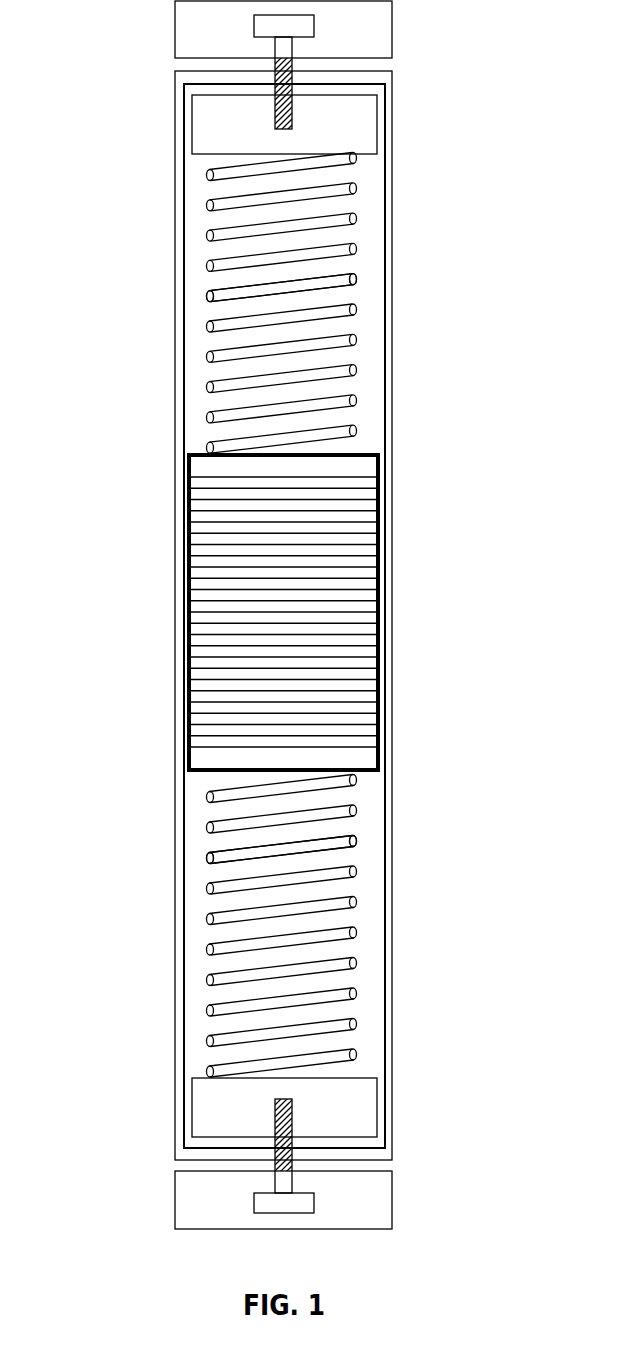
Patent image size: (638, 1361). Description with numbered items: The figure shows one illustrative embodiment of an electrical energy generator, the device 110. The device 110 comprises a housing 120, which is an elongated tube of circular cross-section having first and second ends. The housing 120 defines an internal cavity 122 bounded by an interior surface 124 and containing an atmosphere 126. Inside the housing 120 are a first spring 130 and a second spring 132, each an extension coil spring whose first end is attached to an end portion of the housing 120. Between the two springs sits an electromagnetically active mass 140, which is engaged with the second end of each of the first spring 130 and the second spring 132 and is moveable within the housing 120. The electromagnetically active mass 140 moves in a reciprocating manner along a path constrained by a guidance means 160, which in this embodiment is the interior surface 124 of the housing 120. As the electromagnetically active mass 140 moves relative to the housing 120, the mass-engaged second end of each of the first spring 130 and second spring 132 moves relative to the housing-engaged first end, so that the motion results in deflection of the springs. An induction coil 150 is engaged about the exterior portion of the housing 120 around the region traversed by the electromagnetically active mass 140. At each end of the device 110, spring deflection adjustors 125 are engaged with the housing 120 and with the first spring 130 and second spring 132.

The device 110 is at (90, 107).
The housing 120 is at (393, 165).
The internal cavity 122 is at (372, 327).
The interior surface 124 is at (384, 851).
The spring deflection adjustors 125 is at (392, 37).
The atmosphere 126 is at (372, 230).
The first spring 130 is at (354, 282).
The second spring 132 is at (358, 897).
The electromagnetically active mass 140 is at (373, 455).
The induction coil 150 is at (373, 507).
The guidance means 160 is at (282, 850).